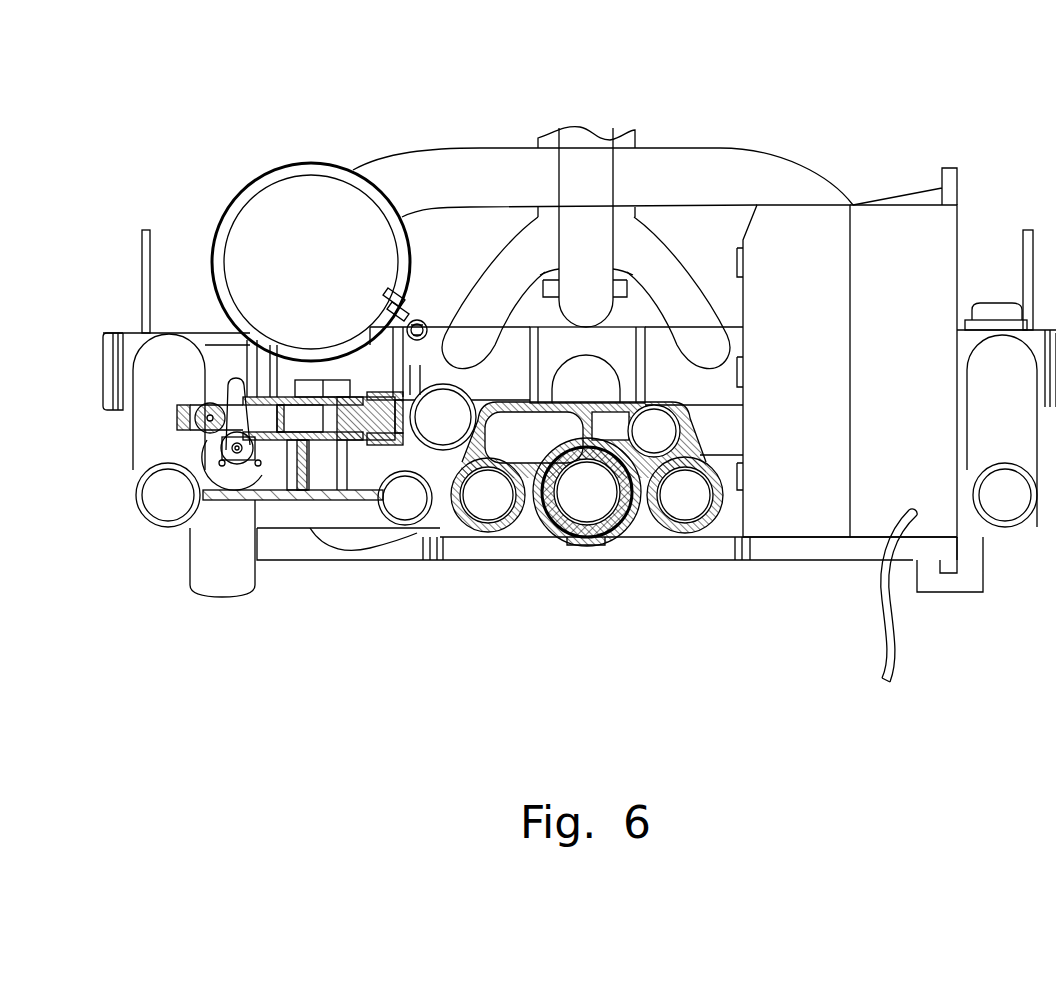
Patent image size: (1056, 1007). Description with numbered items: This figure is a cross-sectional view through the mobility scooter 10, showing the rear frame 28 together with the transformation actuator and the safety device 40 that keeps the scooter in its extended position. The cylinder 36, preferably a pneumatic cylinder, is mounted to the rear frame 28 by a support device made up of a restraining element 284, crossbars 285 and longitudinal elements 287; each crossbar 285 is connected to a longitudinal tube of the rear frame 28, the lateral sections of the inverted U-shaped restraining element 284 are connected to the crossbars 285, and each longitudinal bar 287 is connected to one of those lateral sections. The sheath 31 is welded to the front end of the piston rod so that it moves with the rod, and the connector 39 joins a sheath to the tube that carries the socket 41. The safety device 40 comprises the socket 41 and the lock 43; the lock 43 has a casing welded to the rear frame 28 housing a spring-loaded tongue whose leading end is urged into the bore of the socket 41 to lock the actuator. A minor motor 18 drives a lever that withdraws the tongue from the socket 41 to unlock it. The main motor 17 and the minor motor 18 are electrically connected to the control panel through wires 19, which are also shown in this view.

The mobility scooter 10 is at (806, 130).
The main motor 17 is at (293, 203).
The minor motor 18 is at (237, 460).
The wires 19 is at (405, 302).
The rear frame 28 is at (1020, 574).
The sheath 31 is at (628, 532).
The cylinder 36 is at (577, 528).
The connector 39 is at (443, 452).
The safety device 40 is at (290, 517).
The socket 41 is at (383, 445).
The lock 43 is at (262, 447).
The restraining element 284 is at (712, 535).
The crossbars 285 is at (717, 433).
The longitudinal elements 287 is at (488, 534).